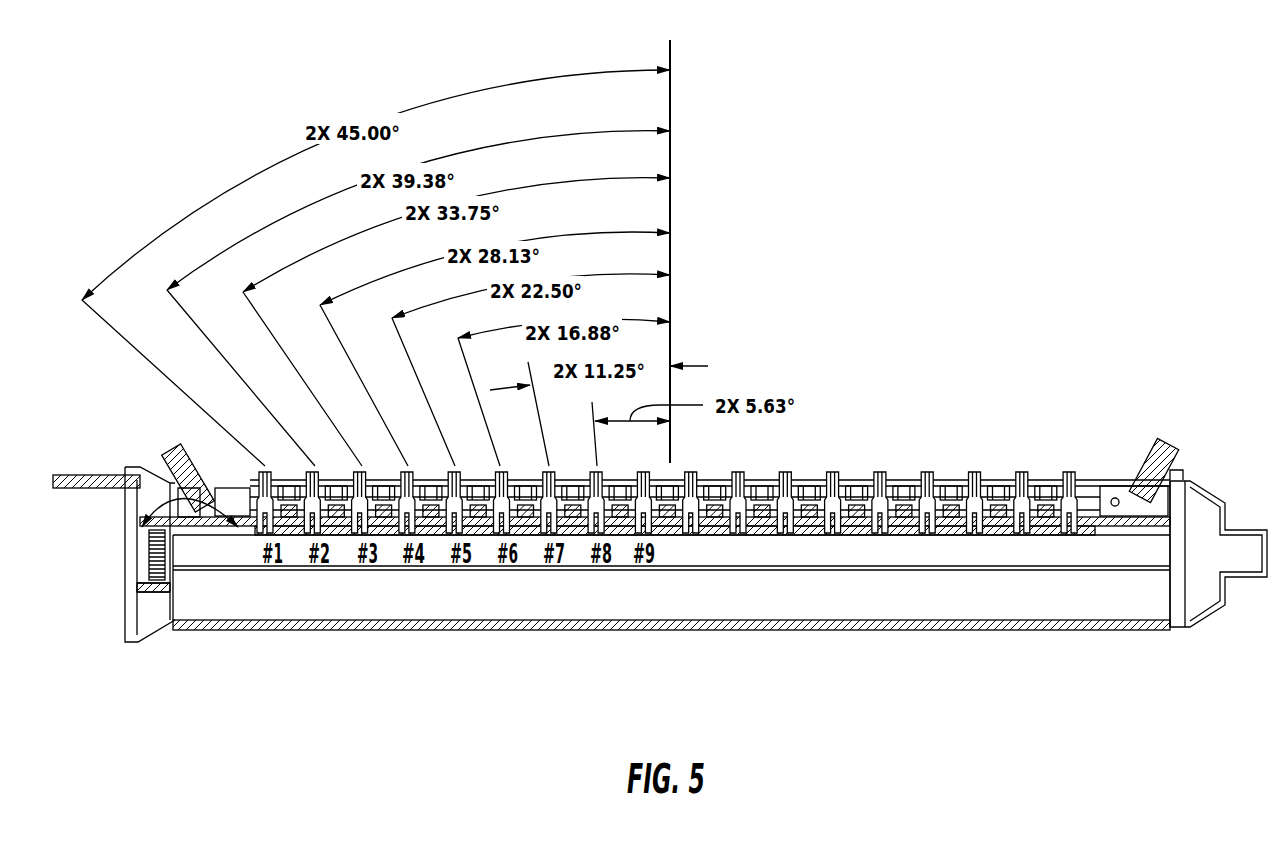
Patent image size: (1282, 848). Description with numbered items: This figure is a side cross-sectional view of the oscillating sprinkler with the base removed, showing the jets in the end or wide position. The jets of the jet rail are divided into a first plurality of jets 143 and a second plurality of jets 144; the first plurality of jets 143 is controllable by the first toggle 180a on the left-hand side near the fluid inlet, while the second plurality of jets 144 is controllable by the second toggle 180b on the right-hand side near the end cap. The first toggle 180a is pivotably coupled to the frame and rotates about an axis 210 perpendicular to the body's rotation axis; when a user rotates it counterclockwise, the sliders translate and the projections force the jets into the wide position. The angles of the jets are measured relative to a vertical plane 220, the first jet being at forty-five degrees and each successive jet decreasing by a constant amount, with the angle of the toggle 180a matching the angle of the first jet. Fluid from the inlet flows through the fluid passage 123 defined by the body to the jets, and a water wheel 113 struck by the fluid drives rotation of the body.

The vertical plane 220 is at (670, 107).
The first toggle 180a is at (176, 458).
The second toggle 180b is at (1172, 442).
The water wheel 113 is at (148, 556).
The axis 210 is at (190, 510).
The fluid passage 123 is at (888, 609).
The first plurality of jets 143 is at (648, 650).
The second plurality of jets 144 is at (1085, 650).